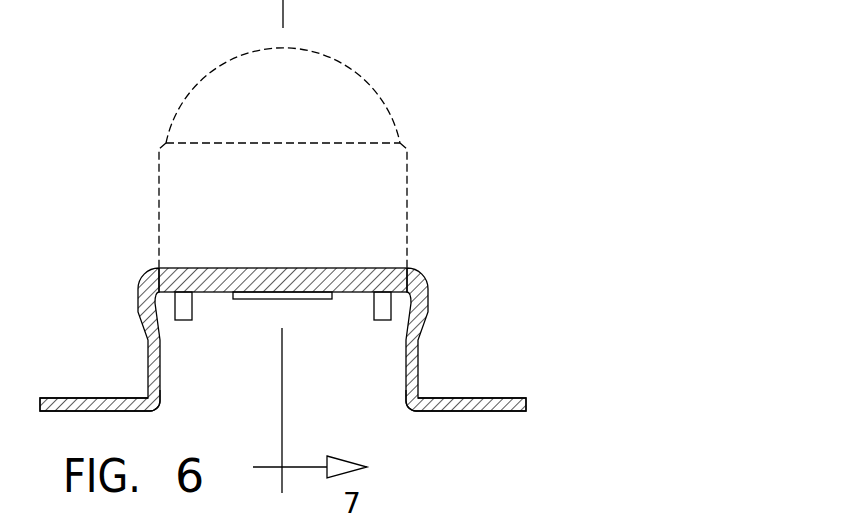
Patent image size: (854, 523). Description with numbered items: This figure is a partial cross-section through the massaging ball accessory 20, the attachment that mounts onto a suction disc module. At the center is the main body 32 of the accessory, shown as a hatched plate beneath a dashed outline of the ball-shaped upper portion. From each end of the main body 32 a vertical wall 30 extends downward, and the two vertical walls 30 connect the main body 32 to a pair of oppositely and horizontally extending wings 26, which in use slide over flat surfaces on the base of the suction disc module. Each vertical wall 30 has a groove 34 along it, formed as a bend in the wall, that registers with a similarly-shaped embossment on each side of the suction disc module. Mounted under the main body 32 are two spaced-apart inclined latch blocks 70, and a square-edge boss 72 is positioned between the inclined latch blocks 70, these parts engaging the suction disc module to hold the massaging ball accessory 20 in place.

The massaging ball accessory 20 is at (445, 122).
The main body 32 is at (347, 278).
The groove 34 is at (139, 308).
The wing 26 is at (70, 398).
The vertical wall 30 is at (162, 395).
The inclined latch block 70 is at (183, 322).
The square-edge boss 72 is at (307, 299).